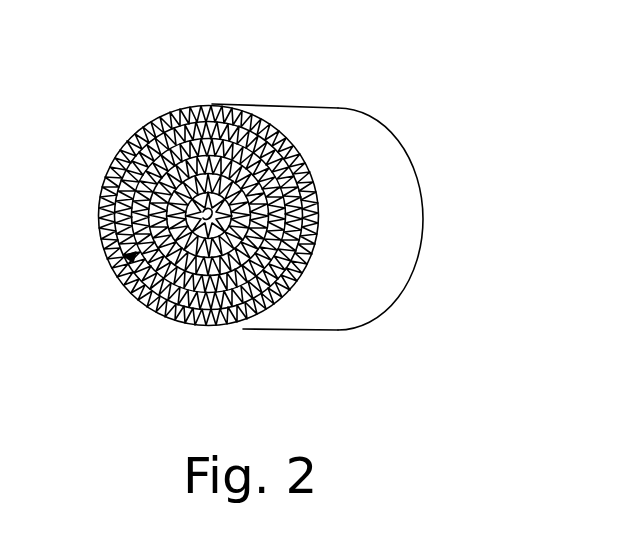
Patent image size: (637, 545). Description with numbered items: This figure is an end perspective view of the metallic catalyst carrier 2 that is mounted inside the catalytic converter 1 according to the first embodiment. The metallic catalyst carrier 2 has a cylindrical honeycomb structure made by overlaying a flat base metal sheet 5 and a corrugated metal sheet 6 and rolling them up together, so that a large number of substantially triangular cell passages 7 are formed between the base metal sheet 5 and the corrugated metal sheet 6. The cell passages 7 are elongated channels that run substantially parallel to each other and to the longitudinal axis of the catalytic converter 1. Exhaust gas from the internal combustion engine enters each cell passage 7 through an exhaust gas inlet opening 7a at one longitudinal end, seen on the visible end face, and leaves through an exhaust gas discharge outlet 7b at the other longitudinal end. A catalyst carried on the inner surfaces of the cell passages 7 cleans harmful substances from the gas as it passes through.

The catalytic converter 1 is at (287, 332).
The metallic catalyst carrier 2 is at (273, 261).
The base metal sheet 5 is at (103, 212).
The corrugated metal sheet 6 is at (122, 266).
The cell passages 7 is at (122, 273).
The exhaust gas inlet opening 7a is at (123, 145).
The exhaust gas discharge outlet 7b is at (413, 162).